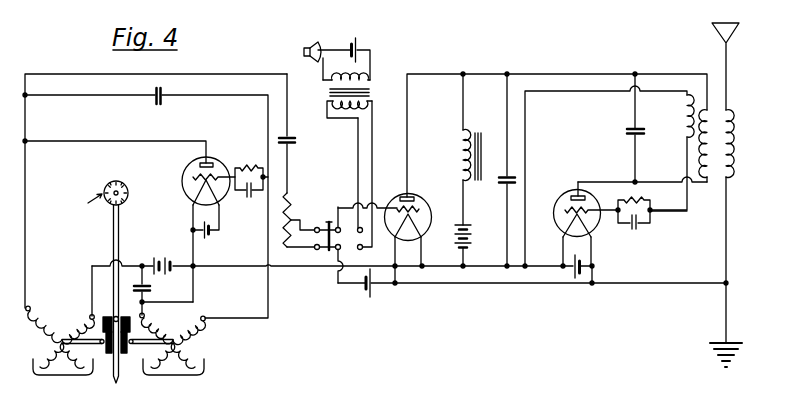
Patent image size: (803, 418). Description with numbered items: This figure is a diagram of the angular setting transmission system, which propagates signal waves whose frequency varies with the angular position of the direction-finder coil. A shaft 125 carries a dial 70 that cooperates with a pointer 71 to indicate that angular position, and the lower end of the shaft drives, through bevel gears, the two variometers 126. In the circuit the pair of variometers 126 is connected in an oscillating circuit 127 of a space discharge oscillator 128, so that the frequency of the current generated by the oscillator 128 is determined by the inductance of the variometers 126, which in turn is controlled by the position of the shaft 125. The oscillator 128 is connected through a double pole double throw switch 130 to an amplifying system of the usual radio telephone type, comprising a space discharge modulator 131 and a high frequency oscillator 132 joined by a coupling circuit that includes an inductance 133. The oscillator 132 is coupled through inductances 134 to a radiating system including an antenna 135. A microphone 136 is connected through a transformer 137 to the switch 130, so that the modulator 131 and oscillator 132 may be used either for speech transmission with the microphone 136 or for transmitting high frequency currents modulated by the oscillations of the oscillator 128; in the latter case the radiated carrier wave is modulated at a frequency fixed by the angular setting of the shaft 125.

The dial 70 is at (128, 193).
The pointer 71 is at (89, 206).
The shaft 125 is at (112, 248).
The variometers 126 is at (73, 373).
The oscillating circuit 127 is at (74, 177).
The space discharge oscillator 128 is at (190, 162).
The double pole double throw switch 130 is at (334, 211).
The space discharge modulator 131 is at (419, 197).
The high frequency oscillator 132 is at (565, 196).
The inductance 133 is at (458, 148).
The inductances 134 is at (717, 183).
The antenna 135 is at (718, 34).
The microphone 136 is at (304, 52).
The transformer 137 is at (369, 91).